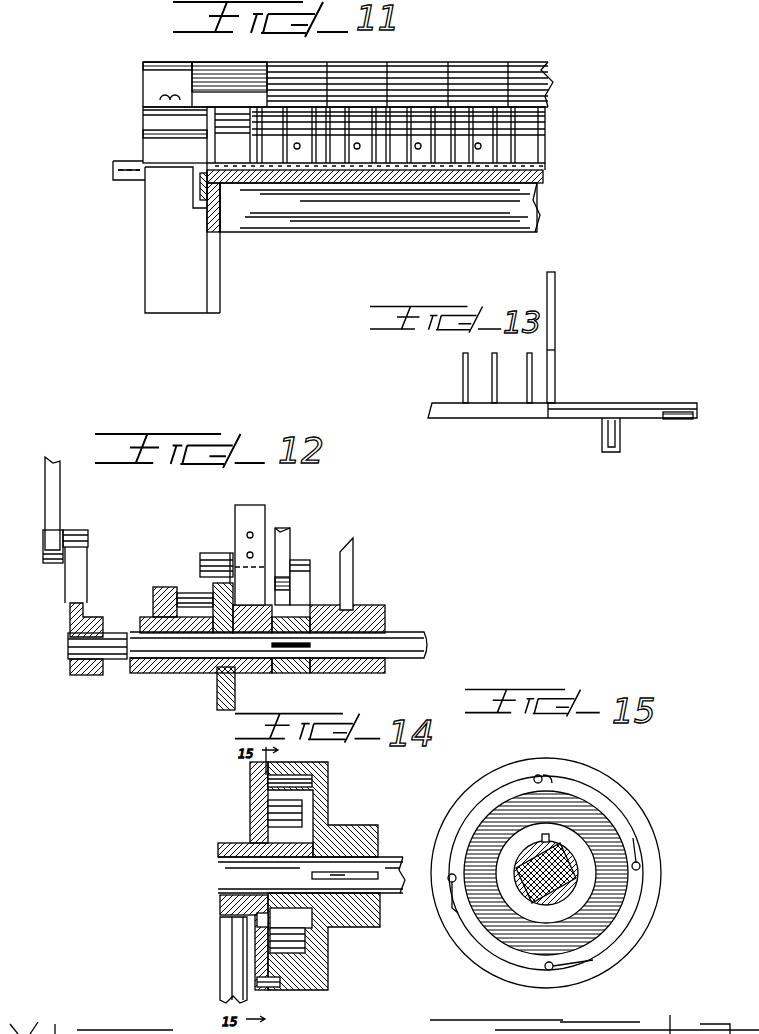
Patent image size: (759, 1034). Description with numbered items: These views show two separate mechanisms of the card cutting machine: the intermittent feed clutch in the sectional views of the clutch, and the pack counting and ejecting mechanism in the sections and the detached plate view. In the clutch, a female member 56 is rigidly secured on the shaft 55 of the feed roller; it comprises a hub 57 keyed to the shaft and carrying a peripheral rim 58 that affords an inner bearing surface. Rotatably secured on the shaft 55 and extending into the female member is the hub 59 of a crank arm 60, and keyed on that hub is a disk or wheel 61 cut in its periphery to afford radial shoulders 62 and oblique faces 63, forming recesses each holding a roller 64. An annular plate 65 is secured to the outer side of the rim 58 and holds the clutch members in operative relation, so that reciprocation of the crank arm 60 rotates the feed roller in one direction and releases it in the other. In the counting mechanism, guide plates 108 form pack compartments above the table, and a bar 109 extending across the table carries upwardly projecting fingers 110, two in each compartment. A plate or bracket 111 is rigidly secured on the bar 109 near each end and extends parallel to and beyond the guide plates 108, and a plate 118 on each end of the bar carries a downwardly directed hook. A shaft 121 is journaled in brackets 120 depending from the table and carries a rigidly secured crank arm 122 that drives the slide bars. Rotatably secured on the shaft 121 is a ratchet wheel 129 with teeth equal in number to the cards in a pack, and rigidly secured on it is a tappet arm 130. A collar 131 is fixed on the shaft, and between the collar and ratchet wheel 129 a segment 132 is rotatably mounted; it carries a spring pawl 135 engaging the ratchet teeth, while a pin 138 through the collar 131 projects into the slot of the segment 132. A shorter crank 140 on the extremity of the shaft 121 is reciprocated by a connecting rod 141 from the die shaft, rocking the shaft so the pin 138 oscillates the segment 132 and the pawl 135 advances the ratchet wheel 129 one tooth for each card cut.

In FIG. 11, the guide plates 108 is at (450, 70).
In FIG. 11, the bar 109 is at (540, 158).
In FIG. 11, the fingers 110 is at (494, 100).
In FIG. 13, the plate or bracket 111 is at (556, 332).
In FIG. 13, the plate 118 is at (668, 404).
In FIG. 12, the brackets 120 is at (353, 579).
In FIG. 12, the shaft 121 is at (408, 634).
In FIG. 12, the crank arm 122 is at (301, 604).
In FIG. 12, the ratchet wheel 129 is at (222, 688).
In FIG. 12, the tappet arm 130 is at (262, 535).
In FIG. 12, the collar 131 is at (148, 618).
In FIG. 12, the segment 132 is at (205, 552).
In FIG. 12, the spring pawl 135 is at (227, 550).
In FIG. 12, the pin 138 is at (192, 596).
In FIG. 12, the crank 140 is at (75, 596).
In FIG. 12, the connecting rod 141 is at (60, 508).
In FIG. 14, the shaft 55 is at (398, 857).
In FIG. 14, the female member 56 is at (330, 783).
In FIG. 15, the female member 56 is at (518, 782).
In FIG. 14, the hub 57 is at (356, 836).
In FIG. 14, the peripheral rim 58 is at (298, 774).
In FIG. 14, the hub 59 is at (220, 852).
In FIG. 14, the crank arm 60 is at (222, 932).
In FIG. 14, the disk or wheel 61 is at (268, 826).
In FIG. 15, the disk or wheel 61 is at (576, 786).
In FIG. 15, the radial shoulders 62 is at (548, 776).
In FIG. 15, the oblique faces 63 is at (521, 779).
In FIG. 15, the roller 64 is at (640, 865).
In FIG. 14, the annular plate 65 is at (258, 807).